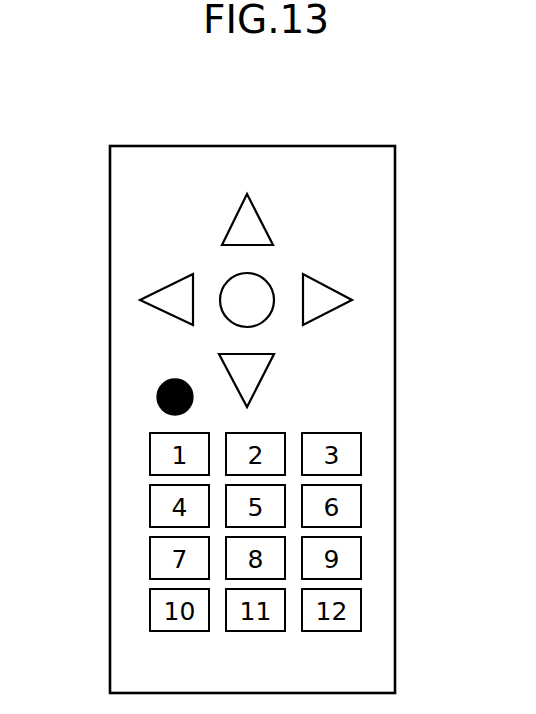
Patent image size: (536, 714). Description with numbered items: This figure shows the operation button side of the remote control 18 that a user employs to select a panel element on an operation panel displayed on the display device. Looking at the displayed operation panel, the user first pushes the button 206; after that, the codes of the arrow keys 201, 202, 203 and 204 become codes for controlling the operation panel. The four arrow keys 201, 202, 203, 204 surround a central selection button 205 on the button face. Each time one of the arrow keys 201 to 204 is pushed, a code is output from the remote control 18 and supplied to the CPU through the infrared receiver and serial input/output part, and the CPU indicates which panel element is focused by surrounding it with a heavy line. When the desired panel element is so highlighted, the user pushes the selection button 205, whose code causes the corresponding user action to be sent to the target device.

The remote control 18 is at (235, 157).
The arrow key 201 is at (142, 300).
The arrow key 202 is at (352, 300).
The arrow key 203 is at (257, 228).
The arrow key 204 is at (255, 377).
The selection button 205 is at (227, 283).
The button 206 is at (155, 404).